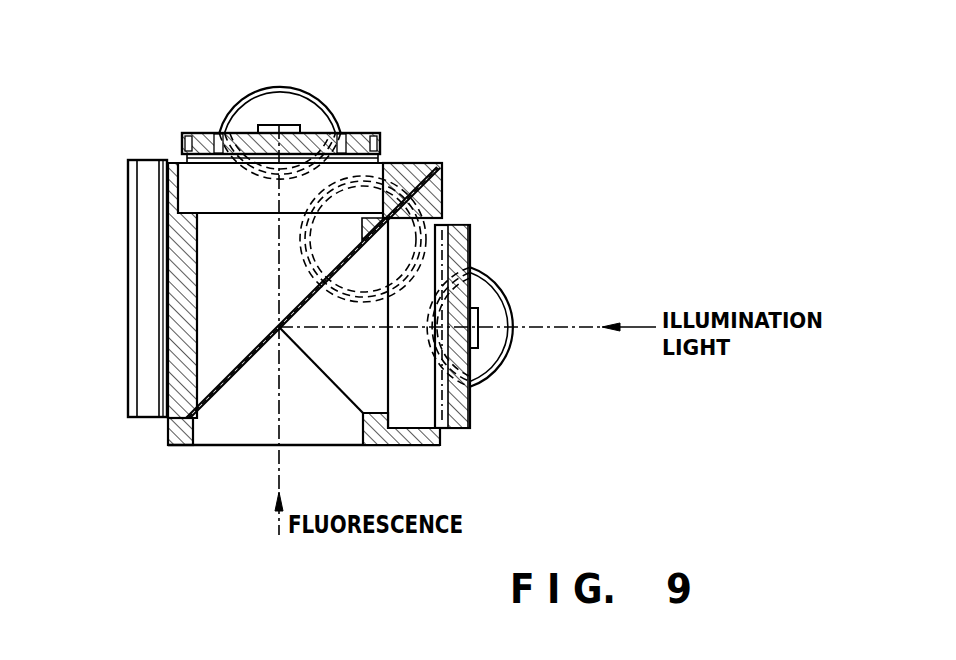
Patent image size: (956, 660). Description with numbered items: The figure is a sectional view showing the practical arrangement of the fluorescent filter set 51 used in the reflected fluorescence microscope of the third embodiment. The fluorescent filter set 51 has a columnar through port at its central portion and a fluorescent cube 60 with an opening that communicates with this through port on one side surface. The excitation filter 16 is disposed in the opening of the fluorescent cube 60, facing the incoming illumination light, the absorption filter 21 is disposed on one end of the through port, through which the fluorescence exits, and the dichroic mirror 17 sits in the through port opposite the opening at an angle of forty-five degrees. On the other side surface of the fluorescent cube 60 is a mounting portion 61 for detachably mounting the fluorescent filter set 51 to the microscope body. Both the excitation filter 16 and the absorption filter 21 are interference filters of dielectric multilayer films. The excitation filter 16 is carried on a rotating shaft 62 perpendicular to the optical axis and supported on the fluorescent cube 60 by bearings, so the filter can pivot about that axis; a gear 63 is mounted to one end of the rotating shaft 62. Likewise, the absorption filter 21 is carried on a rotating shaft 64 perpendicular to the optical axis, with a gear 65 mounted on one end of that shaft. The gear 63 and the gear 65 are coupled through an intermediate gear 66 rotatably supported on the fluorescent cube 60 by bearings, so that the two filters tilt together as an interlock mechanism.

The fluorescent filter set 51 is at (295, 42).
The mounting portion 61 is at (128, 296).
The absorption filter 21 is at (376, 133).
The rotating shaft 64 is at (268, 125).
The gear 65 is at (315, 92).
The gear 66 is at (300, 252).
The gear 63 is at (506, 291).
The rotating shaft 62 is at (480, 343).
The excitation filter 16 is at (470, 238).
The dichroic mirror 17 is at (230, 376).
The fluorescent cube 60 is at (385, 446).